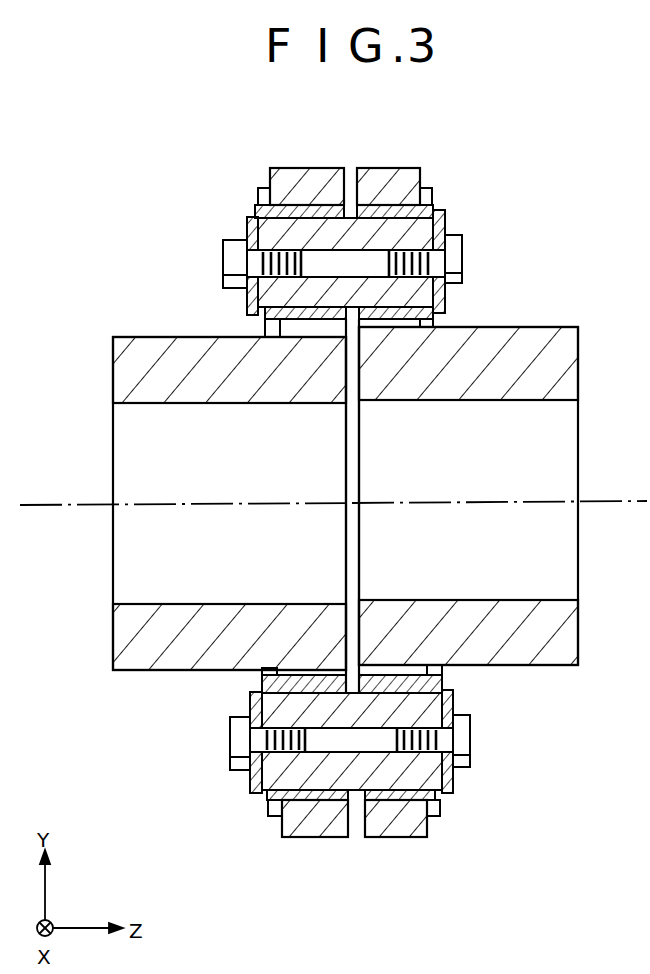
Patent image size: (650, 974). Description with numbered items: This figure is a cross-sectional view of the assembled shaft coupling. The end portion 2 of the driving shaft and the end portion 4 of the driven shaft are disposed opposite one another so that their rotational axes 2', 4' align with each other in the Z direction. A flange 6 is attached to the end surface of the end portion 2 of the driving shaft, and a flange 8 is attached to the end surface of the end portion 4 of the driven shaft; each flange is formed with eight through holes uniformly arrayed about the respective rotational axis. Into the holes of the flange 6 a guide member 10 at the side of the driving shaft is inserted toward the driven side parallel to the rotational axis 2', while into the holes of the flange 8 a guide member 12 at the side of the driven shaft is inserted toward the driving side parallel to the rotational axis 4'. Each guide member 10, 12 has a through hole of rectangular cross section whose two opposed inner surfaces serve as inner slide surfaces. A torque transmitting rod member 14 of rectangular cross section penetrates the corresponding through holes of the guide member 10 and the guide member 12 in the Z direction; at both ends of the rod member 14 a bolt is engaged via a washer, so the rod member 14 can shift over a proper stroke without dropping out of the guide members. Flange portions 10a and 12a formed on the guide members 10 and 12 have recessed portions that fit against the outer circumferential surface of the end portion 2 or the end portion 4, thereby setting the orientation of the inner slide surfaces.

The end portion of the driving shaft 2 is at (229, 470).
The end portion of the driven shaft 4 is at (468, 464).
The flange 6 is at (315, 170).
The flange 8 is at (387, 170).
The guide member at the side of the driving shaft 10 is at (292, 205).
The flange portion 10a is at (258, 200).
The guide member at the side of the driven shaft 12 is at (402, 200).
The flange portion 12a is at (432, 183).
The torque transmitting rod member 14 is at (413, 233).
The rotational axis of the driving shaft 2' is at (186, 474).
The rotational axis of the driven shaft 4' is at (499, 468).